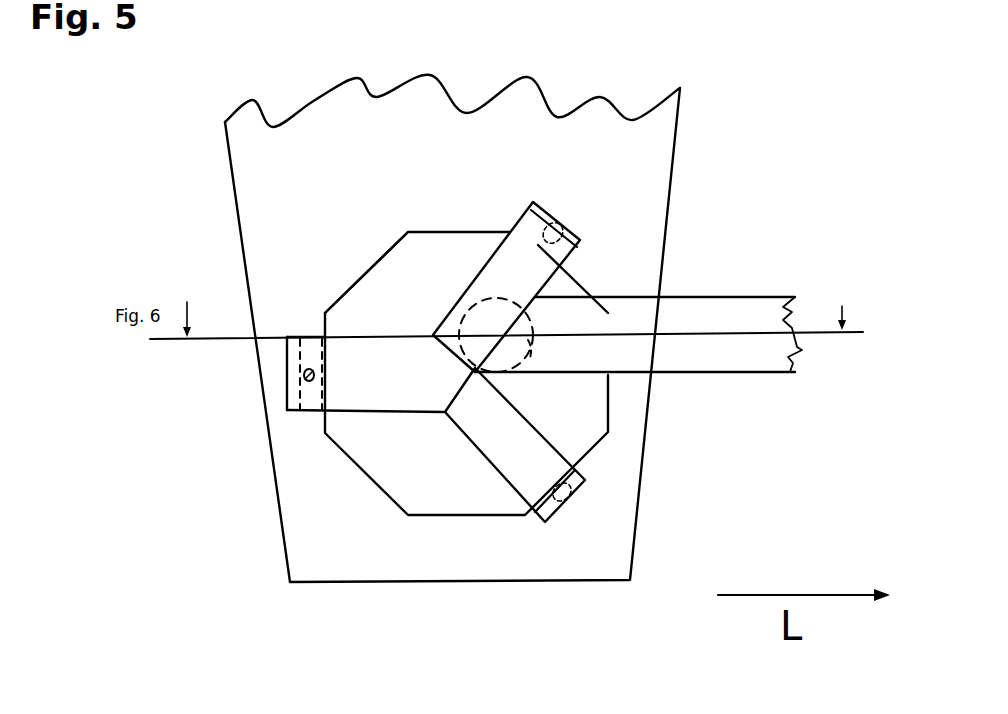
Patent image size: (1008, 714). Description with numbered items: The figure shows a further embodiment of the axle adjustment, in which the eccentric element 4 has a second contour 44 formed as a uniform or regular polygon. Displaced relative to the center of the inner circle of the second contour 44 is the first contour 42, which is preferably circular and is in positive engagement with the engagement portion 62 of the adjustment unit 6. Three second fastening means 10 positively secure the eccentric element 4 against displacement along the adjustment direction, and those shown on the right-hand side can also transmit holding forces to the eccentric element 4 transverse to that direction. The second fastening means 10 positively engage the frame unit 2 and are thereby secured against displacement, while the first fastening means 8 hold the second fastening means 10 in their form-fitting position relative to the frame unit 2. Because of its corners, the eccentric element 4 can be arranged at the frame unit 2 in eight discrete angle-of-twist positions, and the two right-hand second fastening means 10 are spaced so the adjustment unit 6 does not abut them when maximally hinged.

The frame unit 2 is at (335, 552).
The eccentric element 4 is at (393, 280).
The first contour 42 is at (483, 320).
The second contour 44 is at (340, 297).
The adjustment unit 6 is at (722, 350).
The engagement portion 62 is at (533, 347).
The first fastening means 8 is at (577, 240).
The second fastening means 10 is at (545, 210).